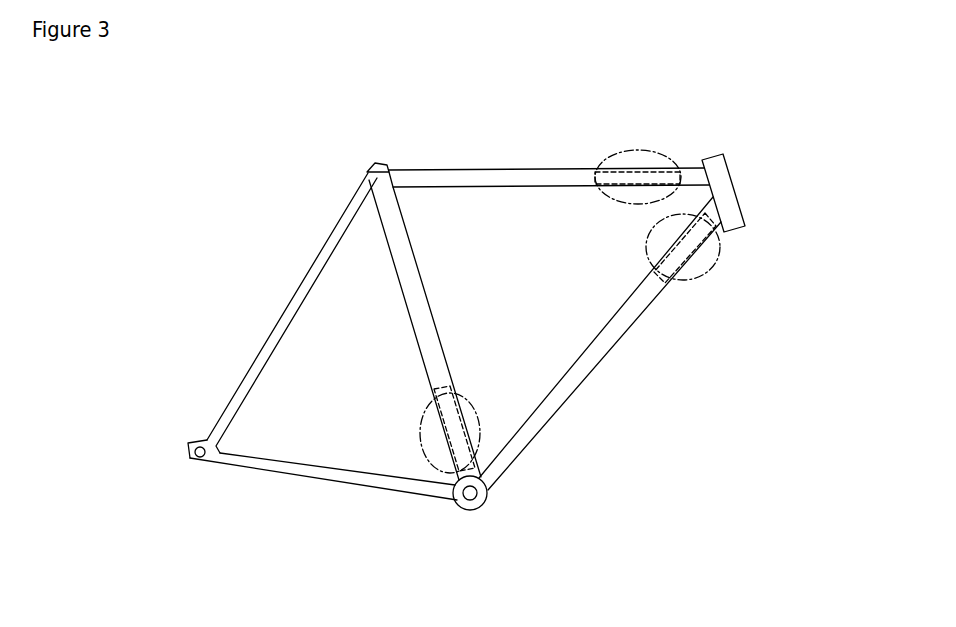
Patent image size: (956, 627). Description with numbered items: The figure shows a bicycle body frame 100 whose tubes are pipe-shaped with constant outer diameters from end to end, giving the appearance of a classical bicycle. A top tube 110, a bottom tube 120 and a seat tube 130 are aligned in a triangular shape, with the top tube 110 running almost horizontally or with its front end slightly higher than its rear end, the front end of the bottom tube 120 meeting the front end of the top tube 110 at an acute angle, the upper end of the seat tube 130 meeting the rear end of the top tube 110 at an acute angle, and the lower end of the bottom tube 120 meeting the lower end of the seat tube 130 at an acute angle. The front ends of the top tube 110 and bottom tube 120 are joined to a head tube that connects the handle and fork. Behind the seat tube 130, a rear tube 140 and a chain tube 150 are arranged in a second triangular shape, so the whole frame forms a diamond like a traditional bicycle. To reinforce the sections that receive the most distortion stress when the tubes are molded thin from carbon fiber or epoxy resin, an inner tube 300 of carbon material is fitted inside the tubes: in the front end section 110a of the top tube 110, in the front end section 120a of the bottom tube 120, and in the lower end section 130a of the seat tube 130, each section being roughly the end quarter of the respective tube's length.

The body frame 100 is at (288, 166).
The top tube 110 is at (498, 171).
The front end section of top tube 110a is at (640, 150).
The bottom tube 120 is at (606, 346).
The front end section of bottom tube 120a is at (718, 262).
The seat tube 130 is at (408, 278).
The lower end section of seat tube 130a is at (432, 520).
The rear tube 140 is at (270, 332).
The chain tube 150 is at (341, 474).
The inner tube 300 is at (672, 160).